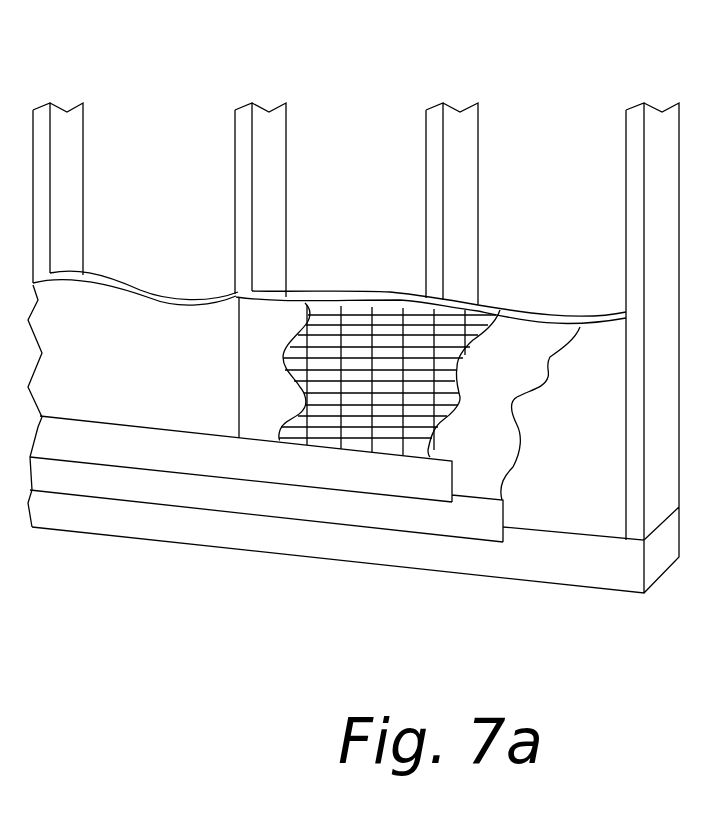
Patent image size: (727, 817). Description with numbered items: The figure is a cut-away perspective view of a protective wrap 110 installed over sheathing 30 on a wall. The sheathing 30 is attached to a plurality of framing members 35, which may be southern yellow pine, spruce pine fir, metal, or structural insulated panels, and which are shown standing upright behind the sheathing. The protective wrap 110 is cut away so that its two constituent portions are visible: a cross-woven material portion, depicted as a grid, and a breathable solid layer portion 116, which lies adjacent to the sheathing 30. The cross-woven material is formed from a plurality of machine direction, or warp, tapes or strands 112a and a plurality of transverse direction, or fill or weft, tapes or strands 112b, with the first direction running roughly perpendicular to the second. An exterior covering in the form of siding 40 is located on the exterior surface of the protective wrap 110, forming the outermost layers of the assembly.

The framing members 35 is at (76, 102).
The sheathing 30 is at (582, 443).
The siding 40 is at (163, 460).
The breathable solid layer portion 116 is at (276, 371).
The protective wrap 110 is at (387, 330).
The machine direction tapes or strands 112a is at (325, 320).
The transverse direction tapes or strands 112b is at (372, 308).